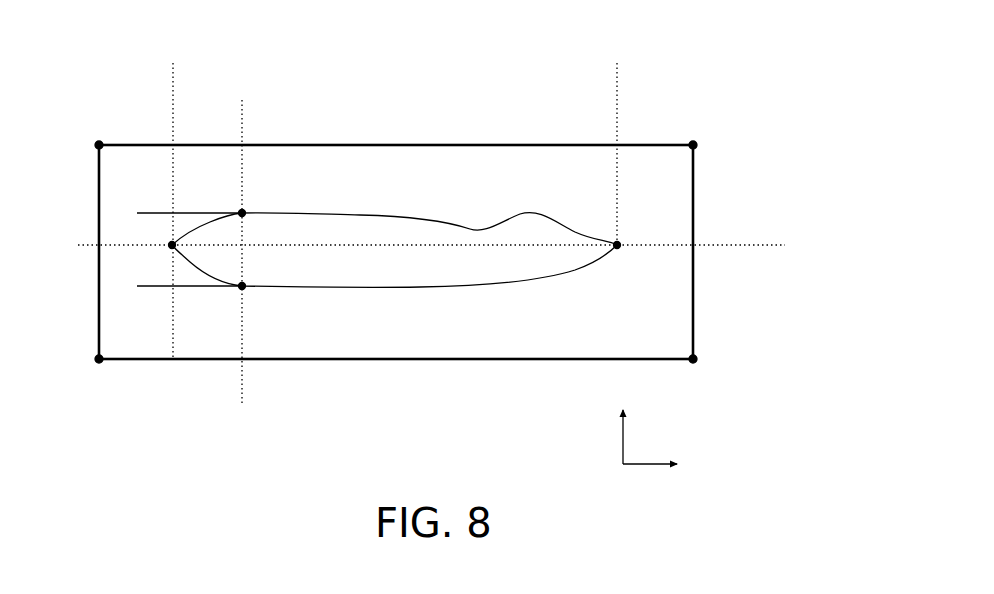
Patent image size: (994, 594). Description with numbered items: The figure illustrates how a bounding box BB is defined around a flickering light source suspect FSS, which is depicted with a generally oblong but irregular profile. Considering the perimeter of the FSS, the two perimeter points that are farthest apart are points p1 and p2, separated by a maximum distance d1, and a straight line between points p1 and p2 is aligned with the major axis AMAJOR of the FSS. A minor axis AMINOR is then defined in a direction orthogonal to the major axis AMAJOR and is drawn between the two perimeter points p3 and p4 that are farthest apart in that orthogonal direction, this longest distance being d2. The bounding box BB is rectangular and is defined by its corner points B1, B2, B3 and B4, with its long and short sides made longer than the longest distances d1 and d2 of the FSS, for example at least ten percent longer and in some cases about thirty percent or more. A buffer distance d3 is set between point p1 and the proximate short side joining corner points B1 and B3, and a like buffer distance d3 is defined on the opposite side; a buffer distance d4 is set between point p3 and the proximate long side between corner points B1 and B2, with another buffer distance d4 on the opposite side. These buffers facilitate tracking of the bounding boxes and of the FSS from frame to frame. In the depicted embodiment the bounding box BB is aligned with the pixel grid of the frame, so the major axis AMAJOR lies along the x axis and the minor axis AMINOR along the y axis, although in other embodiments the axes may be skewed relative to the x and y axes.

The bounding box BB is at (698, 160).
The corner point B1 is at (99, 145).
The corner point B2 is at (693, 145).
The corner point B3 is at (99, 359).
The corner point B4 is at (693, 359).
The flickering light source suspect FSS is at (540, 285).
The perimeter point p1 is at (166, 240).
The perimeter point p2 is at (622, 250).
The perimeter point p3 is at (248, 208).
The perimeter point p4 is at (248, 291).
The major axis AMAJOR is at (742, 243).
The minor axis AMINOR is at (248, 118).
The maximum distance d1 is at (617, 63).
The longest FSS distance d2 is at (139, 196).
The buffer distance d3 is at (173, 173).
The buffer distance d4 is at (200, 145).
The x axis x is at (659, 465).
The y axis y is at (624, 421).